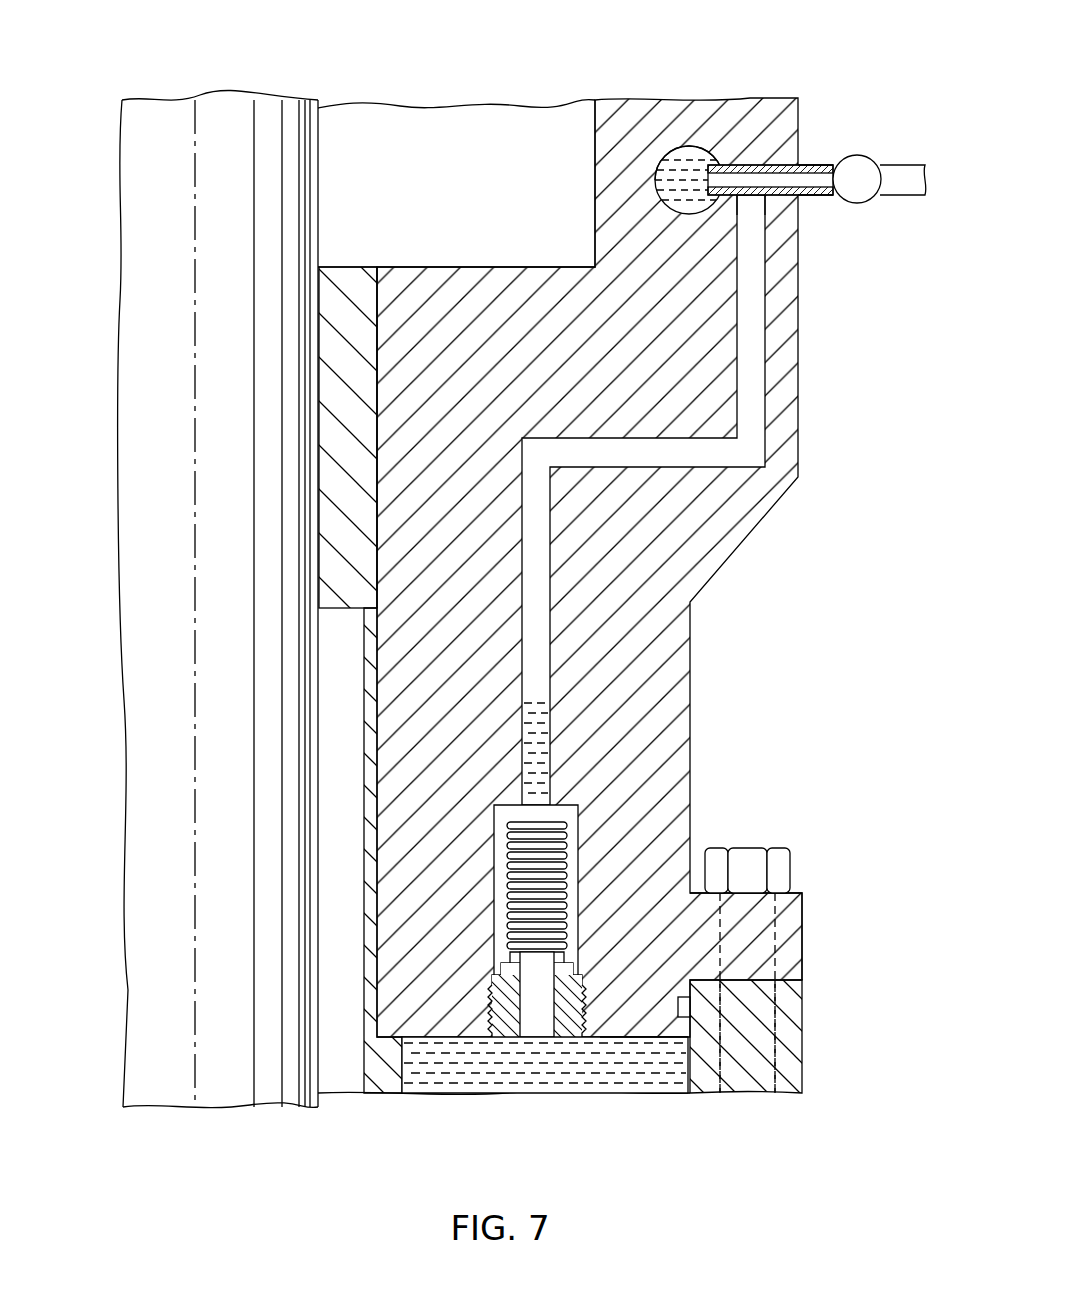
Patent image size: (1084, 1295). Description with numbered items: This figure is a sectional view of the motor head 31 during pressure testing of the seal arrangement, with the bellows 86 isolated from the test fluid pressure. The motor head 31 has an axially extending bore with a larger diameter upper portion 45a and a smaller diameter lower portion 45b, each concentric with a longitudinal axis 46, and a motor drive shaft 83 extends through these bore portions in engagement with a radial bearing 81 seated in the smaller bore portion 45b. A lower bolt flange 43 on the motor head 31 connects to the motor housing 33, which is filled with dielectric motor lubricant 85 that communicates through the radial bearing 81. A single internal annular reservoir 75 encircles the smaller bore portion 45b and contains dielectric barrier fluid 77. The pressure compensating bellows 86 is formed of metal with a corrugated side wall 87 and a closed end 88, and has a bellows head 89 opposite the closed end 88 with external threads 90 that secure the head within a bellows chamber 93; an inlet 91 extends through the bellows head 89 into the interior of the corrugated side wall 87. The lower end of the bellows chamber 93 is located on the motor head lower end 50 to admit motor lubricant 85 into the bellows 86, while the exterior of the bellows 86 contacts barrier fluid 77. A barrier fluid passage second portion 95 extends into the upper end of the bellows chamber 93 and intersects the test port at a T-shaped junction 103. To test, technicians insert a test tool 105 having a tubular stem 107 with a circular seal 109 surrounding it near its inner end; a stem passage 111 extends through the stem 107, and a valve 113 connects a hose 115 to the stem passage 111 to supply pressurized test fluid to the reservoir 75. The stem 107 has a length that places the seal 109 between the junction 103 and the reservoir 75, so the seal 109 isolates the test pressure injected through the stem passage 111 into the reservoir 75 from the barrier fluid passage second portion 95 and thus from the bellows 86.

The motor drive shaft 83 is at (229, 122).
The longitudinal axis 46 is at (190, 273).
The motor head 31 is at (627, 118).
The dielectric barrier fluid 77 is at (688, 148).
The internal annular reservoir 75 is at (660, 170).
The bore larger diameter upper portion 45a is at (595, 213).
The bore smaller diameter lower portion 45b is at (375, 430).
The radial bearing 81 is at (327, 518).
The inlet 91 is at (364, 868).
The circular seal 109 is at (730, 165).
The tubular stem 107 is at (760, 165).
The stem passage 111 is at (820, 165).
The test tool 105 is at (894, 189).
The hose 115 is at (892, 197).
The valve 113 is at (873, 206).
The junction 103 is at (750, 198).
The barrier fluid passage second portion 95 is at (752, 347).
The closed end 88 is at (533, 818).
The bellows 86 is at (578, 827).
The corrugated side wall 87 is at (567, 897).
The bellows chamber 93 is at (572, 943).
The external threads 90 is at (583, 1000).
The bellows head 89 is at (560, 1037).
The dielectric motor lubricant 85 is at (480, 1080).
The motor head lower end 50 is at (645, 1040).
The lower bolt flange 43 is at (803, 908).
The motor housing 33 is at (790, 1070).